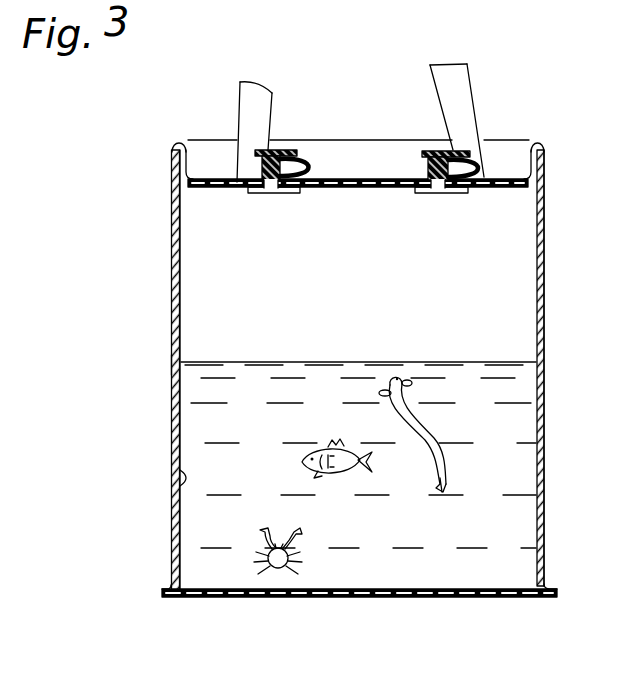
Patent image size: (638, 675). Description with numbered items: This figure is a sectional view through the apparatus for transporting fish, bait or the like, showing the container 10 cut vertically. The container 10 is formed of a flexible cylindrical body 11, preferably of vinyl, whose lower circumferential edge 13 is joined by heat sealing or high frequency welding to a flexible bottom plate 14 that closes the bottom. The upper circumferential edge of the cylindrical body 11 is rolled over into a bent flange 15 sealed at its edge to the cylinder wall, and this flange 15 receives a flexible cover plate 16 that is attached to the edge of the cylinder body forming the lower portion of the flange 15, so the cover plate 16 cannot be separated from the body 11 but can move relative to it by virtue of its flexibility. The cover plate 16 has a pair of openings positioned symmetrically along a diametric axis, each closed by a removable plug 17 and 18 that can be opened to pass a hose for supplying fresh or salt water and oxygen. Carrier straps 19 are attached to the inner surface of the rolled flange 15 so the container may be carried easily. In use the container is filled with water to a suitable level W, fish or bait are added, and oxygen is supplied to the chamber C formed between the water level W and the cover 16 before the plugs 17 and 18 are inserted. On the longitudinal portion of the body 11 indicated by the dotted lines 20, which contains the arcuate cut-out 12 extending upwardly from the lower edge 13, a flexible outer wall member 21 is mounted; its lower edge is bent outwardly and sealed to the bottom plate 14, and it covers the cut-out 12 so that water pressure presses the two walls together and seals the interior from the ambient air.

The container 10 is at (348, 398).
The flexible cylindrical body 11 is at (546, 437).
The cut-out 12 is at (182, 532).
The lower circumferential edge 13 is at (168, 590).
The flexible bottom plate 14 is at (336, 598).
The bent flange 15 is at (174, 147).
The flexible cover plate 16 is at (213, 178).
The removable plug 17 is at (440, 160).
The removable plug 18 is at (272, 165).
The carrier straps 19 is at (462, 126).
The dotted lines 20 is at (180, 478).
The flexible outer wall member 21 is at (172, 365).
The chamber C is at (478, 228).
The water level W is at (500, 362).